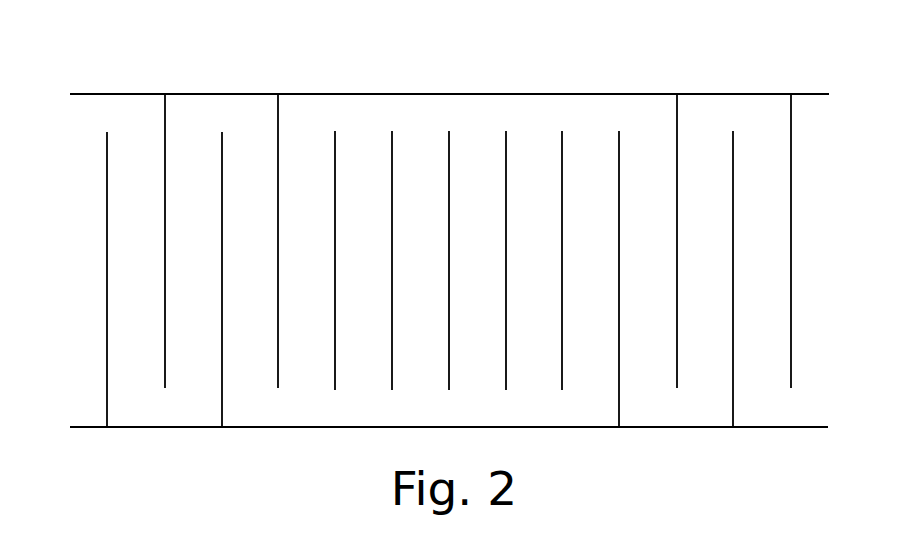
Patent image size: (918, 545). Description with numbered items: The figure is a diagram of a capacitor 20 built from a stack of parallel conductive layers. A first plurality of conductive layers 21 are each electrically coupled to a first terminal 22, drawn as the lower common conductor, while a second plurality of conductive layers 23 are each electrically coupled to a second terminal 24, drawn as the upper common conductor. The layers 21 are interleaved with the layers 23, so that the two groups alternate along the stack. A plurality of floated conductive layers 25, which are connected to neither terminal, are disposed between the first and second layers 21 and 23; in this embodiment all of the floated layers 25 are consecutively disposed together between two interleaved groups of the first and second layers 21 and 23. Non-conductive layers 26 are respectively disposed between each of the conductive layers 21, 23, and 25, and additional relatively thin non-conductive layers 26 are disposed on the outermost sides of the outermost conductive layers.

The capacitor 20 is at (170, 38).
The first plurality of conductive layers 21 is at (106, 180).
The first terminal 22 is at (88, 426).
The second plurality of conductive layers 23 is at (166, 372).
The second terminal 24 is at (810, 94).
The floated conductive layers 25 is at (334, 153).
The non-conductive layers 26 is at (96, 291).